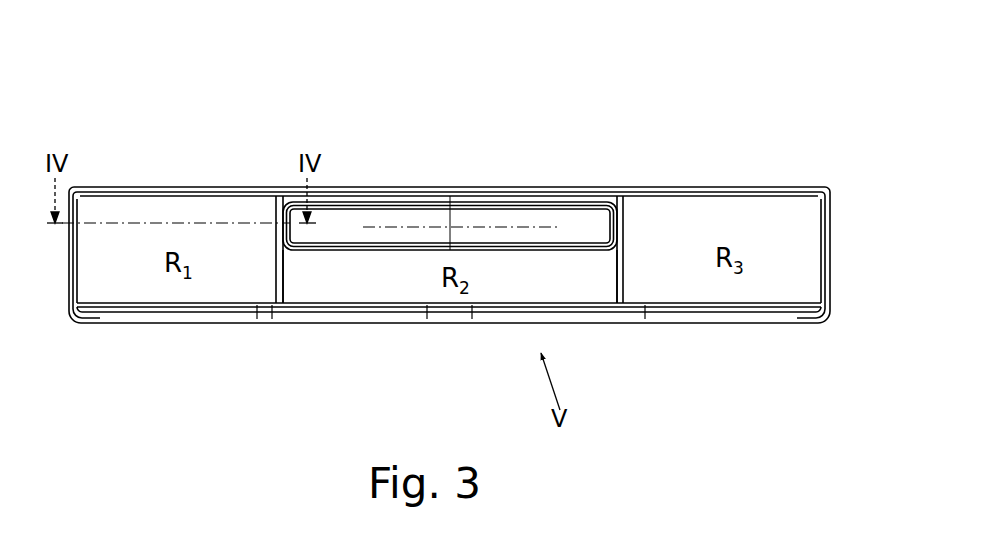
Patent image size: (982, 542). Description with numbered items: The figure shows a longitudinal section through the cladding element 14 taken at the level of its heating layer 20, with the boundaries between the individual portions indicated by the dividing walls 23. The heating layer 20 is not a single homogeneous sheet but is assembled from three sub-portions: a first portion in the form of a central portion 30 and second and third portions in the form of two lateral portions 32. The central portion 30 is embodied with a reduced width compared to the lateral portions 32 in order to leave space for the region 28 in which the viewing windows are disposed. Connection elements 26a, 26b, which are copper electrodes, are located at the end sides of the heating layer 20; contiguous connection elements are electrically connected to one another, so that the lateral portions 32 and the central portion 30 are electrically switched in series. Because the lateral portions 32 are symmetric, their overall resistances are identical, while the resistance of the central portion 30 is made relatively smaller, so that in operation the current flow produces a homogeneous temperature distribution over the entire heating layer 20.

The cladding element 14 is at (492, 247).
The heating layer 20 is at (492, 277).
The wall 23 is at (285, 181).
The connection element 26a is at (80, 192).
The connection element 26b is at (623, 265).
The region 28 is at (516, 226).
The central portion 30 is at (503, 343).
The lateral portions 32 is at (183, 368).